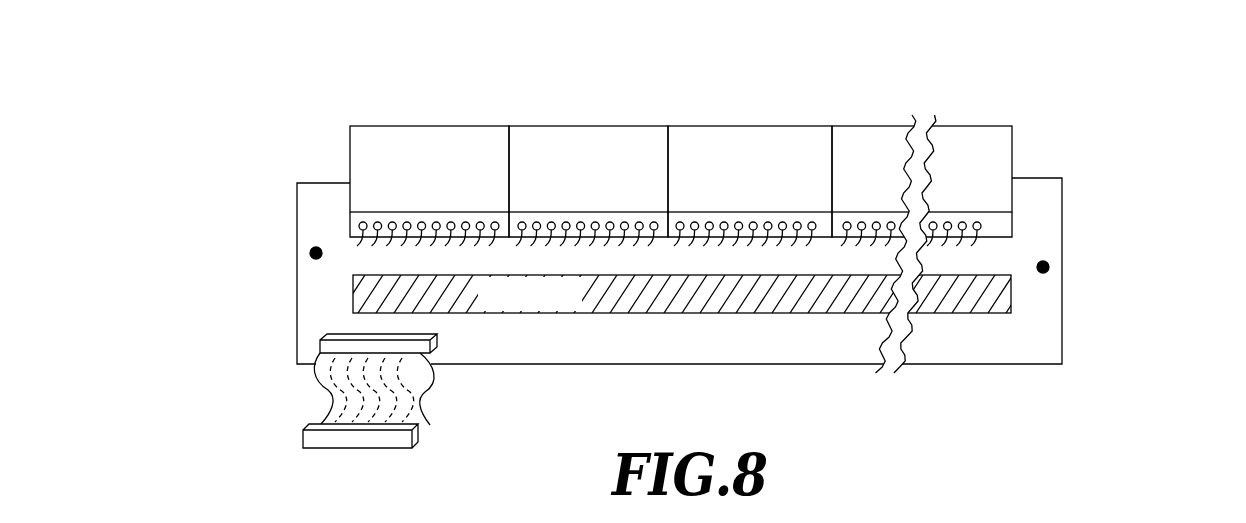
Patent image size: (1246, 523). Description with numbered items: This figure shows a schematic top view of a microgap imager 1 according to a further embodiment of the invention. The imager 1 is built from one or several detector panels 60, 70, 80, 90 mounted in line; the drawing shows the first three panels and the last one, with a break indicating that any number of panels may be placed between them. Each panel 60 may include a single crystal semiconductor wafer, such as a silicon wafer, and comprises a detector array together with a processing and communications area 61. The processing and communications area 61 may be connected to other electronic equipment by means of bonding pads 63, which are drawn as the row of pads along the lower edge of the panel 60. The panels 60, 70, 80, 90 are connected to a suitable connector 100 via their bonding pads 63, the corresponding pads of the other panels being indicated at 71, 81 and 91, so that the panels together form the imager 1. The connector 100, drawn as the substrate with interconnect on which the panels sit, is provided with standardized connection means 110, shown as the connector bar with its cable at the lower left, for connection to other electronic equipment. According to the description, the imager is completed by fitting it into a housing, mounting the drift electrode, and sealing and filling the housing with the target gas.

The imager 1 is at (712, 247).
The detector panel 60 is at (417, 137).
The processing and communications area 61 is at (352, 212).
The bonding pads 63 is at (352, 236).
The detector panel 70 is at (622, 145).
The leads of IC2 71 is at (545, 213).
The detector panel 80 is at (767, 142).
The leads of IC3 81 is at (710, 213).
The detector panel 90 is at (878, 145).
The leads of ICM 91 is at (993, 223).
The connector 100 is at (1044, 306).
The standardized connection means 110 is at (407, 438).